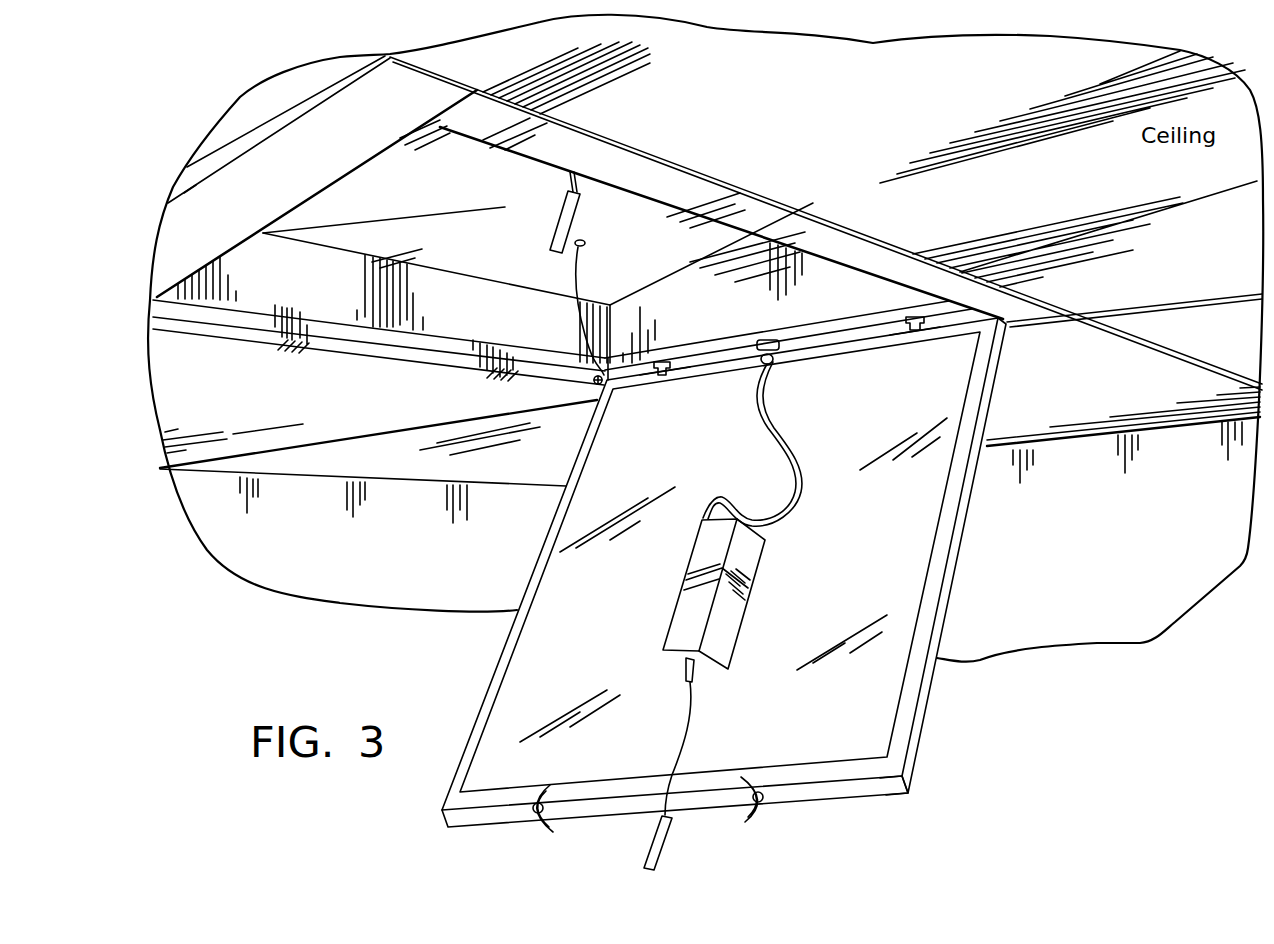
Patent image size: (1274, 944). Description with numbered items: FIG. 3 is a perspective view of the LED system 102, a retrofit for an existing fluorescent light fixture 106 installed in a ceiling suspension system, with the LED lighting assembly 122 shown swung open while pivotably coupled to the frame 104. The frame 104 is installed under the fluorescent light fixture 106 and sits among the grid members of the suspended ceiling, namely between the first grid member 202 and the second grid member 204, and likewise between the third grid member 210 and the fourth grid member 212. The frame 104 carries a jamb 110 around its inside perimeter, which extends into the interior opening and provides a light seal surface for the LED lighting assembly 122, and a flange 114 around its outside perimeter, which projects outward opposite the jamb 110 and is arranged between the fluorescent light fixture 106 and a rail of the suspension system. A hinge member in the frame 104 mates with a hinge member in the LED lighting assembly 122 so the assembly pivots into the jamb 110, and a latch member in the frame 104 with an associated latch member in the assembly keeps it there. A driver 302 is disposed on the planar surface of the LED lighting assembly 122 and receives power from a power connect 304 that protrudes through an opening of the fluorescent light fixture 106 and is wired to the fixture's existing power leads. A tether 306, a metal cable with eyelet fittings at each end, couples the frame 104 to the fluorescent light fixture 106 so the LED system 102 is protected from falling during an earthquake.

The LED system 102 is at (990, 597).
The frame 104 is at (357, 356).
The fluorescent light fixture 106 is at (370, 172).
The jamb 110 is at (443, 357).
The flange 114 is at (1013, 302).
The LED lighting assembly 122 is at (910, 797).
The first grid member 202 is at (1073, 330).
The second grid member 204 is at (325, 88).
The third grid member 210 is at (825, 220).
The fourth grid member 212 is at (267, 347).
The driver 302 is at (727, 667).
The power connect 304 is at (555, 233).
The tether 306 is at (582, 247).